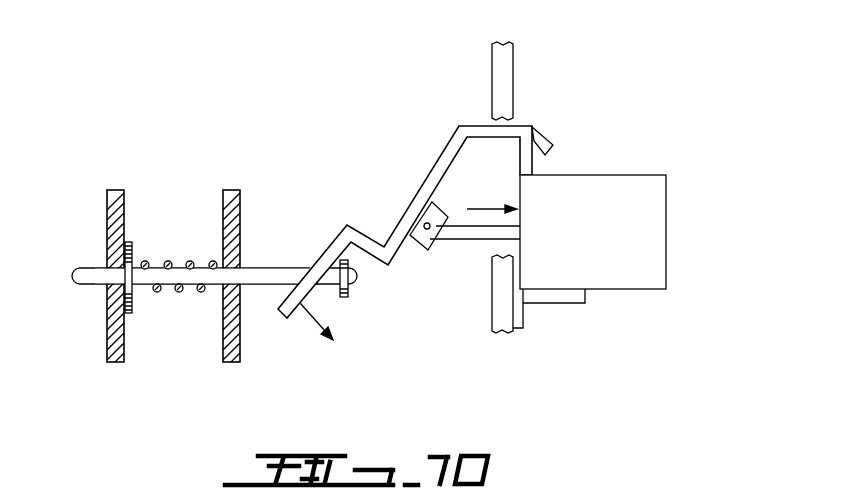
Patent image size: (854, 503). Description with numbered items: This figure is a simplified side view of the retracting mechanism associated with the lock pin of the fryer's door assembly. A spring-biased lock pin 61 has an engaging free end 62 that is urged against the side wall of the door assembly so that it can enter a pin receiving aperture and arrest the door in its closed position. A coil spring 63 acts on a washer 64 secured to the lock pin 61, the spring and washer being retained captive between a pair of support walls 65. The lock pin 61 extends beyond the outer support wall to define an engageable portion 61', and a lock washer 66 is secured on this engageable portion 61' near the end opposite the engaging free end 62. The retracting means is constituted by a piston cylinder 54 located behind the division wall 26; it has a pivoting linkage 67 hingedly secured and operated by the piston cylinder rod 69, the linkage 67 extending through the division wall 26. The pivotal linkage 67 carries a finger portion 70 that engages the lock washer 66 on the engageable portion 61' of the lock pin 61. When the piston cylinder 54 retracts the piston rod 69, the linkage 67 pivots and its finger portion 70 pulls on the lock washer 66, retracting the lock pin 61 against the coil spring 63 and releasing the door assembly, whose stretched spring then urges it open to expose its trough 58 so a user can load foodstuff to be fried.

The division wall 26 is at (505, 75).
The piston cylinder 54 is at (602, 233).
The trough 58 is at (538, 142).
The lock pin 61 is at (206, 359).
The engageable portion 61' is at (315, 221).
The engaging free end 62 is at (87, 286).
The coil spring 63 is at (203, 291).
The washer 64 is at (137, 304).
The support walls 65 is at (108, 206).
The lock washer 66 is at (344, 298).
The pivoting linkage 67 is at (422, 185).
The piston cylinder rod 69 is at (475, 240).
The finger portion 70 is at (288, 318).